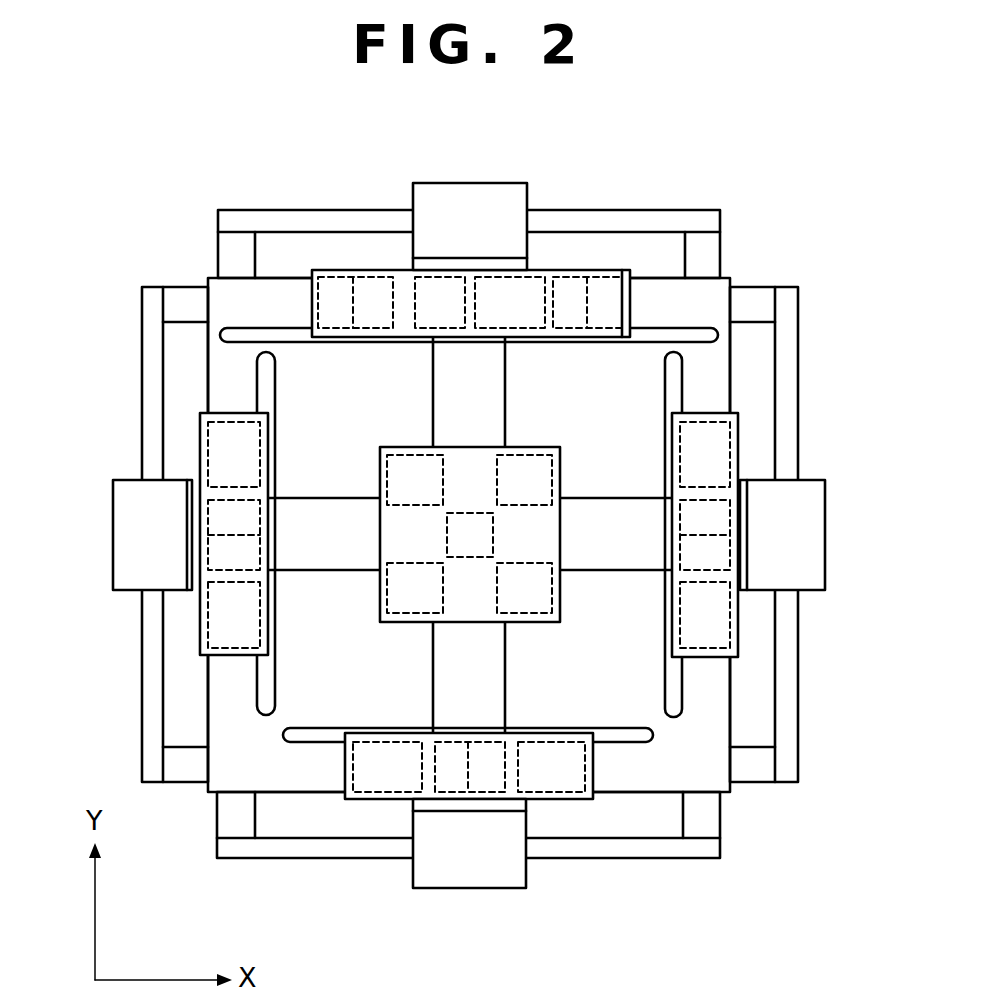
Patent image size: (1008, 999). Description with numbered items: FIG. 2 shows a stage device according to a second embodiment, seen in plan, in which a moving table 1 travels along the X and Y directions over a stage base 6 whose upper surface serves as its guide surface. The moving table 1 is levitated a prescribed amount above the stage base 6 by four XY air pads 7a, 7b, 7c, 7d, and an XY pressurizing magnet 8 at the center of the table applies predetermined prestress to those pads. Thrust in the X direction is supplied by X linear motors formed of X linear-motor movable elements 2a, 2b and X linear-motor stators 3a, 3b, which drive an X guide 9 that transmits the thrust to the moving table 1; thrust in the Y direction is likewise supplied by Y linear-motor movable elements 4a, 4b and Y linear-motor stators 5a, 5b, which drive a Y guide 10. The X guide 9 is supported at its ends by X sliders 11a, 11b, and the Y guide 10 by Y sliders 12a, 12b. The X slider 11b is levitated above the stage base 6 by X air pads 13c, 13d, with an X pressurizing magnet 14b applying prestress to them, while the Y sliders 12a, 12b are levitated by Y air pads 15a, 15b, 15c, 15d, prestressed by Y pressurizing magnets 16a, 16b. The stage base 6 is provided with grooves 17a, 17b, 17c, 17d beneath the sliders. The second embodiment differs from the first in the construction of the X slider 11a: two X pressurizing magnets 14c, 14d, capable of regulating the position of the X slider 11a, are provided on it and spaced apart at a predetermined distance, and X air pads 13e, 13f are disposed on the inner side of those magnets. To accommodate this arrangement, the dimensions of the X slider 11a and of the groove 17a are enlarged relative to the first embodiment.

The moving table 1 is at (463, 612).
The X linear-motor movable element 2a is at (475, 203).
The X linear-motor movable element 2b is at (475, 862).
The X linear-motor stator 3a is at (578, 228).
The X linear-motor stator 3b is at (595, 848).
The Y linear-motor movable element 4a is at (135, 535).
The Y linear-motor movable element 4b is at (798, 535).
The Y linear-motor stator 5a is at (152, 642).
The Y linear-motor stator 5b is at (787, 627).
The stage base 6 is at (245, 753).
The XY air pad 7a is at (413, 462).
The XY air pad 7b is at (520, 468).
The XY air pad 7c is at (405, 593).
The XY air pad 7d is at (523, 607).
The XY pressurizing magnet 8 is at (490, 525).
The X guide 9 is at (460, 380).
The Y guide 10 is at (330, 523).
The X slider 11a is at (365, 285).
The X slider 11b is at (378, 800).
The Y slider 12a is at (230, 420).
The Y slider 12b is at (740, 440).
The X air pad 13c is at (377, 758).
The X air pad 13d is at (548, 755).
The X air pad 13e is at (407, 330).
The X air pad 13f is at (507, 318).
The X pressurizing magnet 14b is at (483, 743).
The X pressurizing magnet 14c is at (330, 285).
The X pressurizing magnet 14d is at (600, 292).
The Y air pad 15a is at (243, 450).
The Y air pad 15b is at (237, 620).
The Y air pad 15c is at (698, 455).
The Y air pad 15d is at (697, 615).
The Y pressurizing magnet 16a is at (252, 552).
The Y pressurizing magnet 16b is at (683, 552).
The groove 17a is at (297, 338).
The groove 17b is at (617, 737).
The groove 17c is at (272, 373).
The groove 17d is at (672, 703).